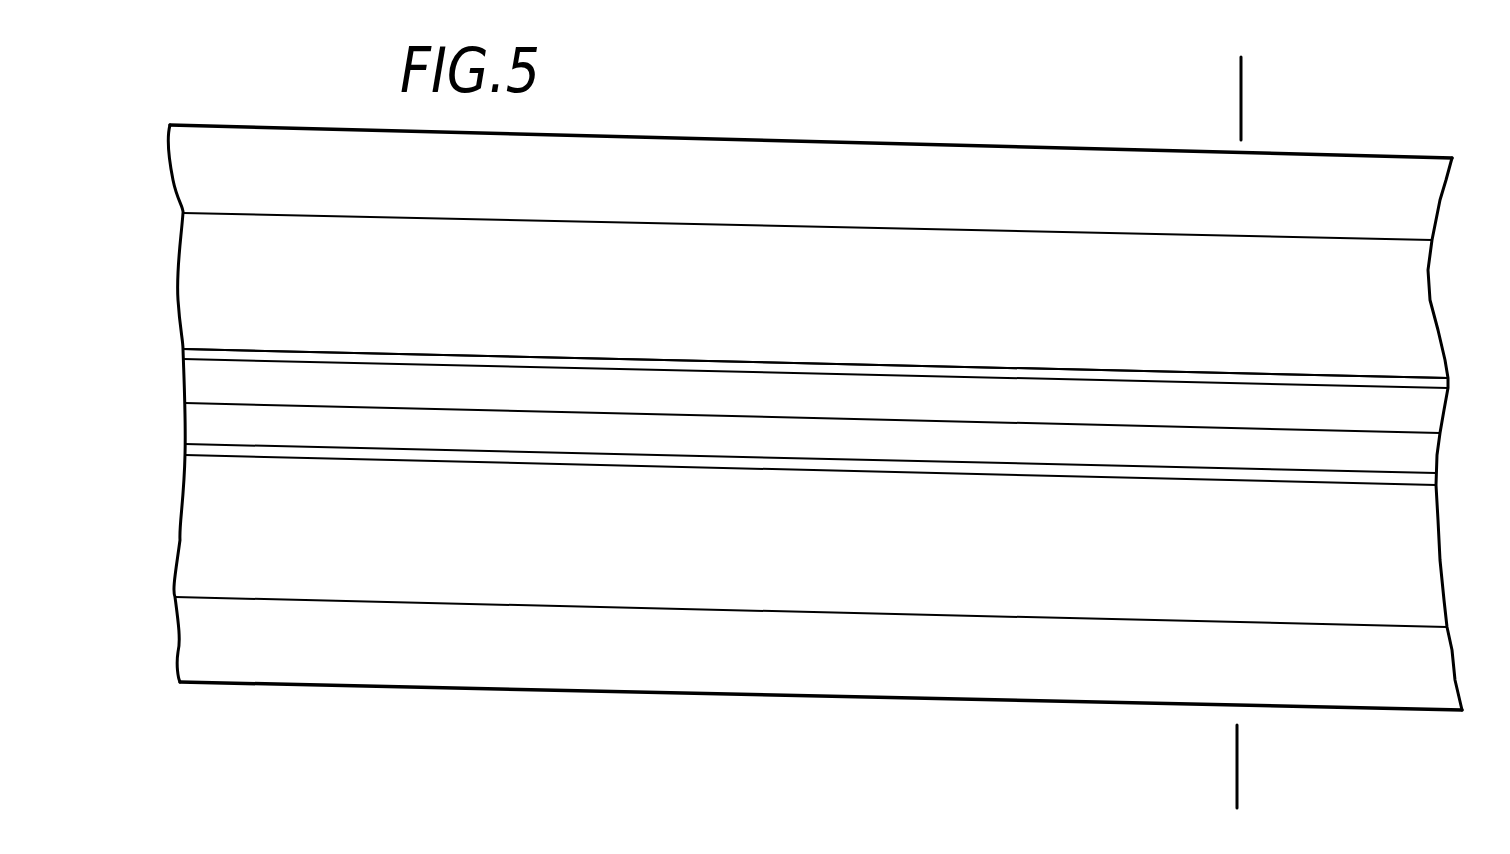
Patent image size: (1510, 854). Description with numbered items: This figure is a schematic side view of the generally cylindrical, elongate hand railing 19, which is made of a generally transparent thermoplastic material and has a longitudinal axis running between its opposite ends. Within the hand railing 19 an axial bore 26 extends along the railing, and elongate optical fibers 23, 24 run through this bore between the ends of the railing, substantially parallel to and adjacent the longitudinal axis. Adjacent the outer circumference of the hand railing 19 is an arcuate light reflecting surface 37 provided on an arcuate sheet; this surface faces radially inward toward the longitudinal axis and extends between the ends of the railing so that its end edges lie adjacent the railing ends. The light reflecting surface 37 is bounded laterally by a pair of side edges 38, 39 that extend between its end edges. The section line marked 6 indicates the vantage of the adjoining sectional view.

The hand railing 19 is at (762, 140).
The side edge of light reflecting surface 38 is at (848, 227).
The light reflecting surface 37 is at (972, 255).
The axial bore 26 is at (1447, 383).
The optical fiber 23 is at (1433, 410).
The optical fiber 24 is at (1432, 458).
The side edge of light reflecting surface 39 is at (332, 599).
The section line 6- 6 is at (1240, 66).